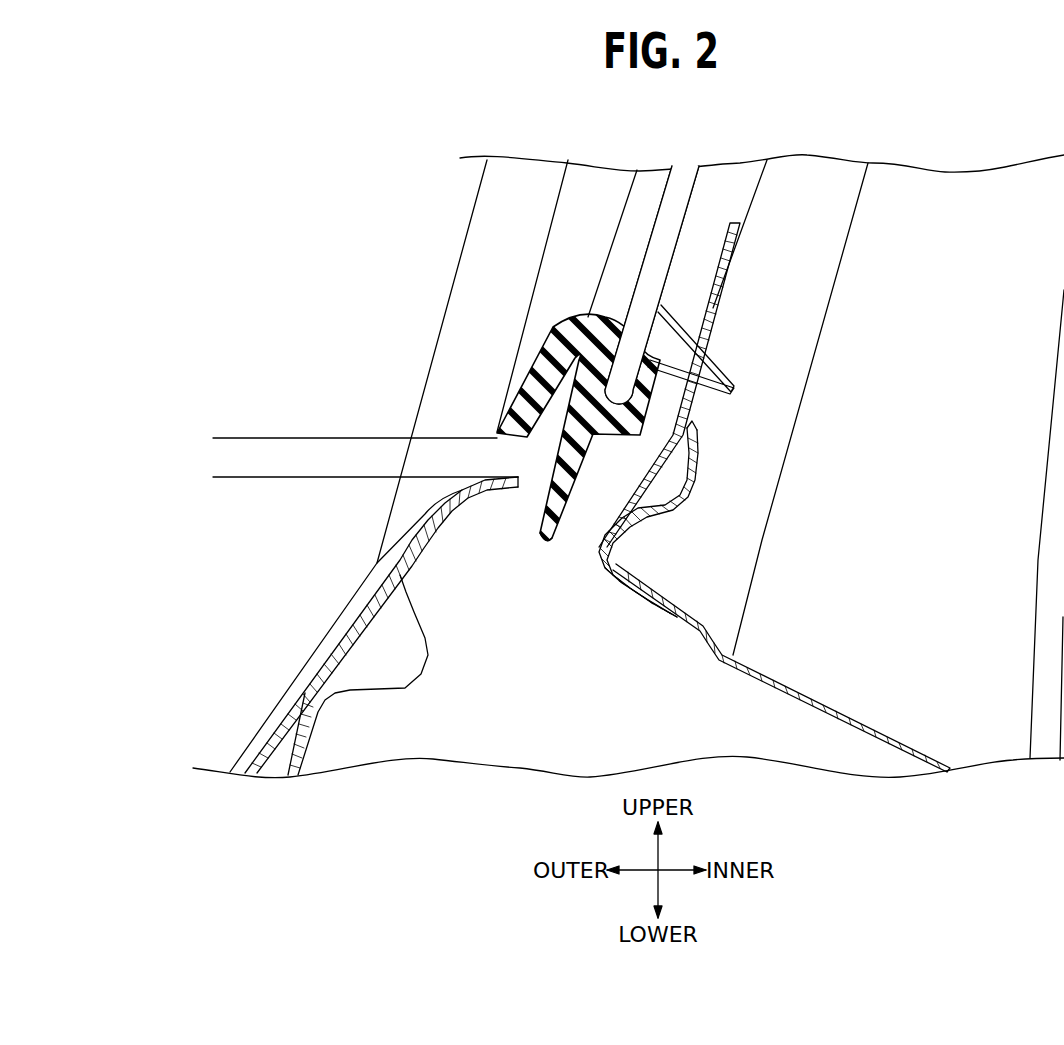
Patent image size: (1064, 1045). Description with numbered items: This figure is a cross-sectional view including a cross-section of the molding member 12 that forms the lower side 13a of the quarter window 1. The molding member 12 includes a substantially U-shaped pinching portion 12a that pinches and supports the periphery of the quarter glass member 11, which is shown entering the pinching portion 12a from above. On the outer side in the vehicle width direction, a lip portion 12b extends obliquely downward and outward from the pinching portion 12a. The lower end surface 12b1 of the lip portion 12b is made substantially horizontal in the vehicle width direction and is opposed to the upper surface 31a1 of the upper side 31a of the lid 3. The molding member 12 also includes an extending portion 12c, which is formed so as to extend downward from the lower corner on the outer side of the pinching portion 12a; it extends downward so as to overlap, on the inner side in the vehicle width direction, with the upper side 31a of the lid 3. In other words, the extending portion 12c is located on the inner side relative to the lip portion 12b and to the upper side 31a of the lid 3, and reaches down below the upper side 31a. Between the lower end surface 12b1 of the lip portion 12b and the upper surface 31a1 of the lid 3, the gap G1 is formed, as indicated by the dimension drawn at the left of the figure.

The quarter window 1 is at (613, 102).
The quarter glass member 11 is at (684, 190).
The molding member 12 is at (696, 434).
The pinching portion 12a is at (645, 393).
The lip portion 12b is at (523, 375).
The lower end surface 12b1 is at (517, 441).
The extending portion 12c is at (578, 460).
The lower side 13a is at (512, 400).
The lid 3 is at (376, 615).
The upper side 31a is at (447, 490).
The upper surface 31a1 is at (522, 475).
The gap G1 is at (273, 527).